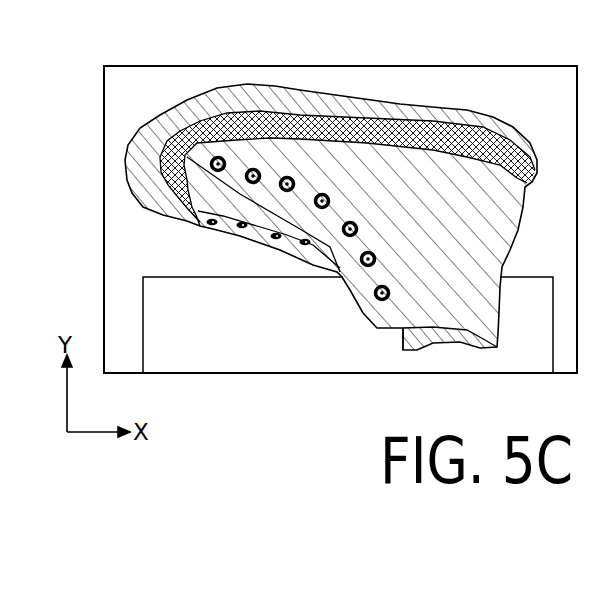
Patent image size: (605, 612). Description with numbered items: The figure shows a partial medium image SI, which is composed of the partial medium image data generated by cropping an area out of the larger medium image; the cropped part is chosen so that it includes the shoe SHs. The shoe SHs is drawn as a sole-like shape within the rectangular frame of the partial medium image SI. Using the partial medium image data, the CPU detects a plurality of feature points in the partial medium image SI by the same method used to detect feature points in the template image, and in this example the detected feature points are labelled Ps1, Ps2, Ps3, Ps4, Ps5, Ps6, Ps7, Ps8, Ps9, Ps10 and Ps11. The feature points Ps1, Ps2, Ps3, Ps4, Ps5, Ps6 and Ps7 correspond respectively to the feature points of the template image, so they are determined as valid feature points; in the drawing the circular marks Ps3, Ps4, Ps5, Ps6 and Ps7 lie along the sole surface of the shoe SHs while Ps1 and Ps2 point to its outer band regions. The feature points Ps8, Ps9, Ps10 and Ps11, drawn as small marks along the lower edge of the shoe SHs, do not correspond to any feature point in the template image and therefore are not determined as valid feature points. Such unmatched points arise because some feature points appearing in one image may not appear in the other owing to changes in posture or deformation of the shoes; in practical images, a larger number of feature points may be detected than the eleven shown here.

The feature point Ps1 is at (160, 120).
The feature point Ps2 is at (243, 183).
The feature point Ps3 is at (288, 175).
The feature point Ps4 is at (328, 193).
The feature point Ps5 is at (346, 238).
The feature point Ps6 is at (368, 268).
The feature point Ps7 is at (383, 302).
The feature point Ps8 is at (212, 226).
The feature point Ps9 is at (242, 229).
The feature point Ps10 is at (276, 240).
The feature point Ps11 is at (305, 246).
The shoe SHs is at (443, 108).
The partial medium image SI is at (513, 66).